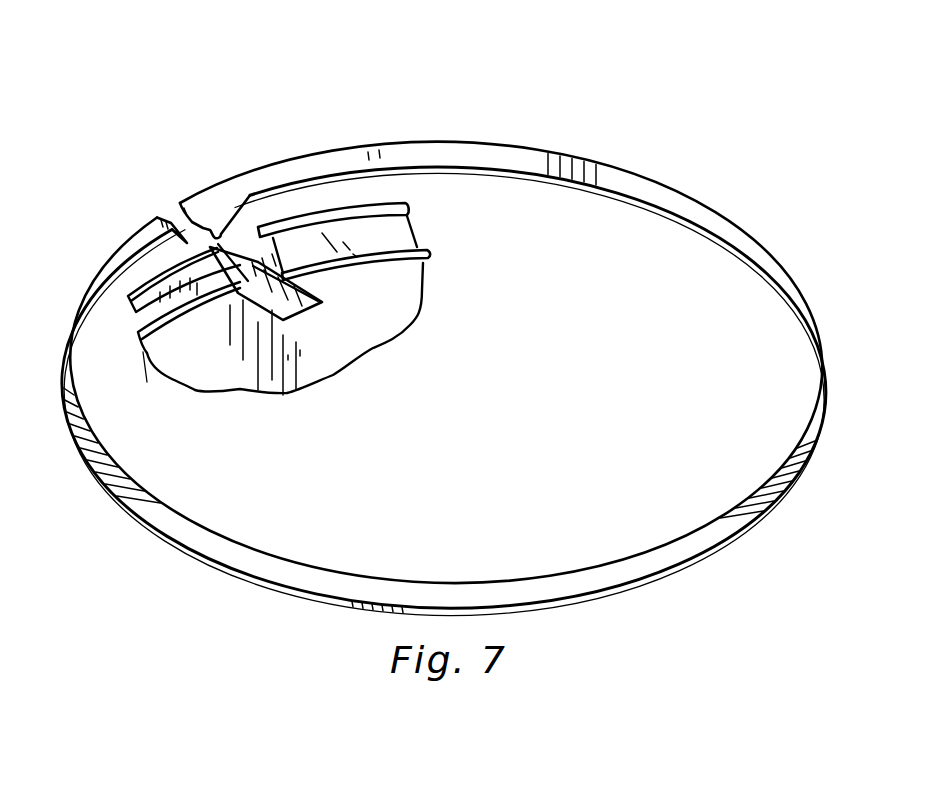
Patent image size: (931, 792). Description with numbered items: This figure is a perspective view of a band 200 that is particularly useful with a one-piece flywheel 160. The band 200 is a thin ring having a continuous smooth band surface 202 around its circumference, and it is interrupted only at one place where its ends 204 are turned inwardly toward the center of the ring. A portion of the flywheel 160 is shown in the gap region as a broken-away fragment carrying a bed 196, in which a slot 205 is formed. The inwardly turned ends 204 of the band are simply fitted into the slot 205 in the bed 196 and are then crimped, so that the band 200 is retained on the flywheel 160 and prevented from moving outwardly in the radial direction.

The band 200 is at (542, 128).
The band surface 202 is at (297, 167).
The bed 196 is at (386, 240).
The one-piece flywheel 160 is at (441, 292).
The ends 204 is at (208, 237).
The slot 205 is at (281, 305).